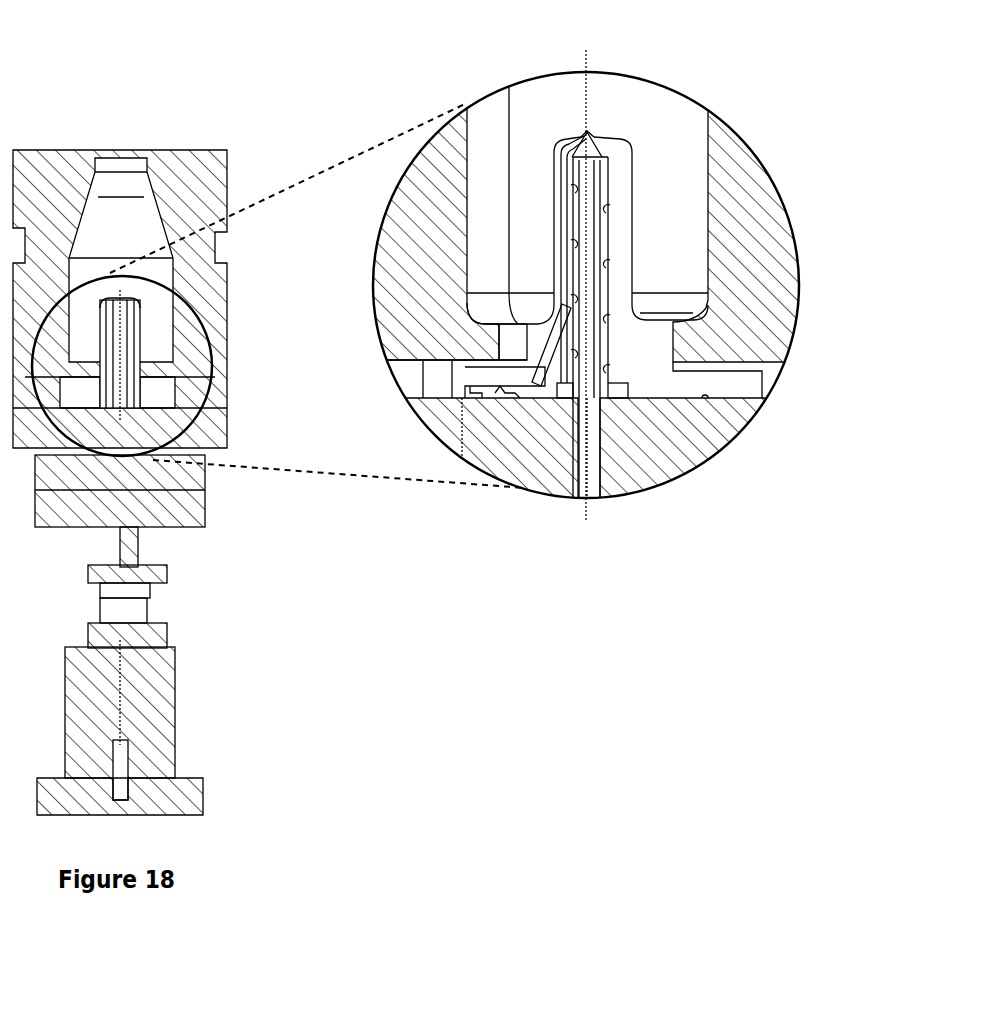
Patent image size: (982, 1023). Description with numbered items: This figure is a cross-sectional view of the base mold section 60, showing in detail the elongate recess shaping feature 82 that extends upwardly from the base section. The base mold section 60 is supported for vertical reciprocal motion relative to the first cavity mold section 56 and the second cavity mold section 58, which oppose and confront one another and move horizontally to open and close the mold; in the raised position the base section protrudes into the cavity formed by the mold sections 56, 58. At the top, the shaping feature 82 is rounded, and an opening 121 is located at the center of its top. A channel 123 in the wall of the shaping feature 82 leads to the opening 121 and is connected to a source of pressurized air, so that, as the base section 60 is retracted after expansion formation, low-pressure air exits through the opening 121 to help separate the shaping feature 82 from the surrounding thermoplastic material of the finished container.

The first cavity mold section 56 is at (393, 313).
The second cavity mold section 58 is at (757, 348).
The base mold section 60 is at (648, 315).
The recess shaping feature 82 is at (632, 198).
The opening 121 is at (587, 132).
The channel 123 is at (557, 262).